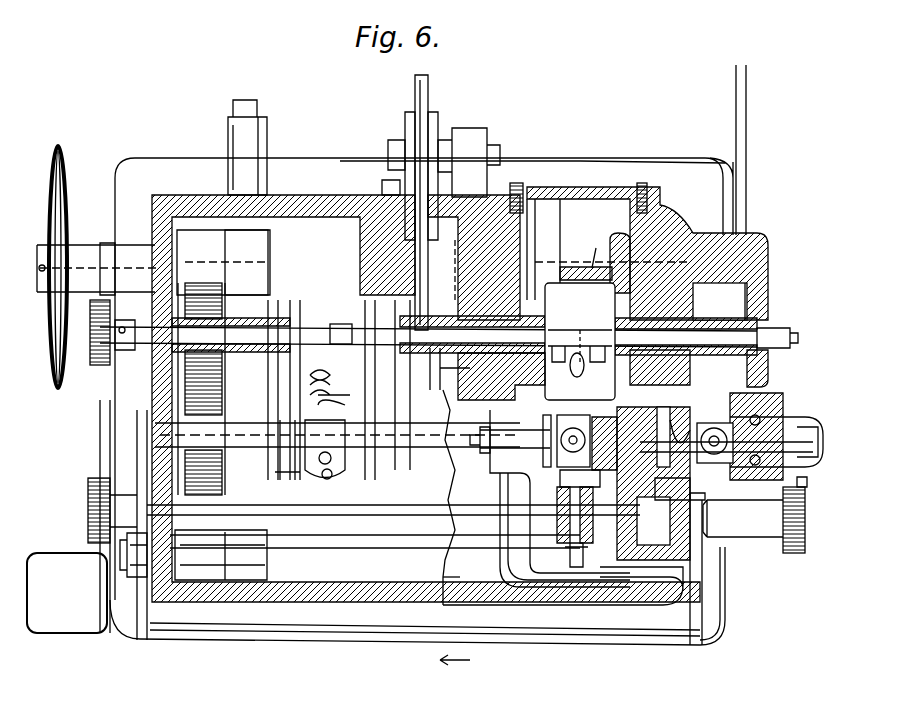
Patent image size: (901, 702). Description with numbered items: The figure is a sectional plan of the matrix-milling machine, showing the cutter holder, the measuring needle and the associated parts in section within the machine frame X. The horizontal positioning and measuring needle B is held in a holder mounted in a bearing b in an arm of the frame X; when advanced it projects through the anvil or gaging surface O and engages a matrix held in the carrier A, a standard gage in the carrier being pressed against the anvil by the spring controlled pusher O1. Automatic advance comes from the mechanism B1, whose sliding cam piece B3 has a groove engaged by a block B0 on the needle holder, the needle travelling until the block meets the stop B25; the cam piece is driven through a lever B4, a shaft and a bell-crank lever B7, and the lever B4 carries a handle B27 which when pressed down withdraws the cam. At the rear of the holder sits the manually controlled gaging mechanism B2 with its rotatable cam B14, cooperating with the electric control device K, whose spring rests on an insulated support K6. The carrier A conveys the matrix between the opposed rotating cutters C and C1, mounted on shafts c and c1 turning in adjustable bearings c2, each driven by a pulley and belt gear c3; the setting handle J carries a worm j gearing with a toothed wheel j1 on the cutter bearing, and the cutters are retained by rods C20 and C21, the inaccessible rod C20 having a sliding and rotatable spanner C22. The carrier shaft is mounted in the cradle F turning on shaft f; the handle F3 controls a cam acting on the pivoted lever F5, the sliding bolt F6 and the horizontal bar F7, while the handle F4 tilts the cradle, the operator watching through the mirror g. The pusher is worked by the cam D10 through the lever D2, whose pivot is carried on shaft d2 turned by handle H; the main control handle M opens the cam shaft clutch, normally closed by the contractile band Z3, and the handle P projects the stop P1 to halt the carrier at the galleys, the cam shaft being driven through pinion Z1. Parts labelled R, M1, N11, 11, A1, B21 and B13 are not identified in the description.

The hand wheel R is at (56, 148).
The bearing bushing M1 is at (238, 232).
The main control handle M is at (147, 370).
The handle P is at (124, 555).
The handle H is at (130, 640).
The pinion Z1 is at (222, 300).
The contractile band Z3 is at (219, 382).
The shaft d2 is at (221, 472).
The gear N11 is at (220, 389).
The rod C20 is at (352, 324).
The sliding and rotatable spanner C22 is at (92, 365).
The rod C21 is at (800, 335).
The pulley and belt gear c3 is at (400, 318).
The setting handle J is at (432, 270).
The section line 11 is at (454, 454).
The toothed wheel j1 is at (785, 357).
The screw or worm j is at (745, 285).
The machine frame X is at (770, 262).
The cradle F is at (560, 267).
The shaft f is at (596, 248).
The milling cutter C is at (568, 330).
The milling cutter C1 is at (590, 330).
The cutter shaft c is at (558, 365).
The cutter shaft c1 is at (596, 365).
The bearings c2 is at (550, 378).
The spindle A1 is at (545, 433).
The carrier A is at (578, 425).
The mirror g is at (590, 432).
The bearing b is at (612, 420).
The measuring needle B is at (566, 506).
The needle moving mechanism B1 is at (690, 410).
The insulated support K6 is at (770, 395).
The rotatable cam B14 is at (805, 417).
The sleeve B21 is at (823, 437).
The gaging mechanism B2 is at (753, 451).
The block B0 is at (760, 460).
The collar B13 is at (805, 487).
The handle F4 is at (807, 520).
The electric control device K is at (790, 550).
The sliding cam piece B3 is at (712, 520).
The stop B25 is at (690, 500).
The lever B4 is at (702, 590).
The handle B27 is at (722, 642).
The lever D2 is at (337, 424).
The cam D10 is at (312, 485).
The bell-crank lever B7 is at (385, 490).
The handle F3 is at (88, 510).
The stop P1 is at (245, 560).
The spring controlled pusher O1 is at (498, 455).
The anvil O is at (505, 460).
The bar F7 is at (490, 530).
The sliding bolt F6 is at (558, 540).
The pivoted lever F5 is at (575, 567).